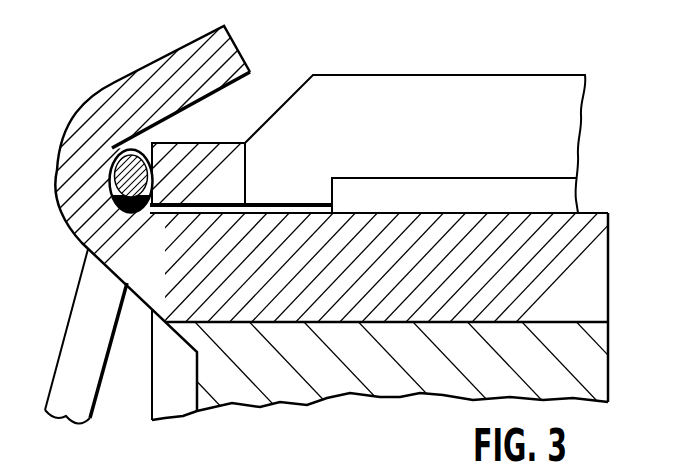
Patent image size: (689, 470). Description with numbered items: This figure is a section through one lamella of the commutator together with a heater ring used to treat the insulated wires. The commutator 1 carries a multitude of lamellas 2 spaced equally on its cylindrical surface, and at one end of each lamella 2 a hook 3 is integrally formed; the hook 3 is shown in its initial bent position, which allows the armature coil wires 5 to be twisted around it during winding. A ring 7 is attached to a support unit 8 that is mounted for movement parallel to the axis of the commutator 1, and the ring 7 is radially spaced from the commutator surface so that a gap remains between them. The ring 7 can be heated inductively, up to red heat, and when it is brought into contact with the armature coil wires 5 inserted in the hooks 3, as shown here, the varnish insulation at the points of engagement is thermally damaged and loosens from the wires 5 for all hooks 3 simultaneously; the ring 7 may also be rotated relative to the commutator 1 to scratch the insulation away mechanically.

The commutator 1 is at (592, 204).
The lamella 2 is at (577, 281).
The hook 3 is at (144, 92).
The armature coil wire 5 is at (120, 183).
The ring 7 is at (213, 163).
The support unit 8 is at (552, 92).